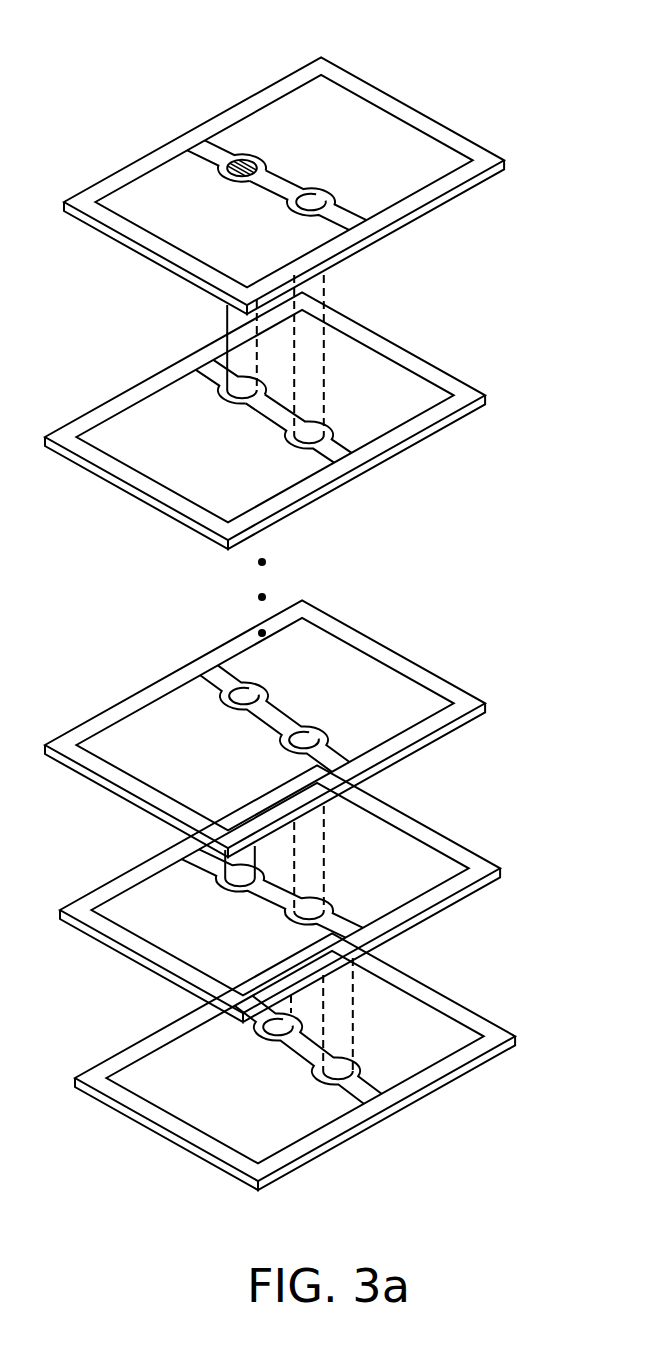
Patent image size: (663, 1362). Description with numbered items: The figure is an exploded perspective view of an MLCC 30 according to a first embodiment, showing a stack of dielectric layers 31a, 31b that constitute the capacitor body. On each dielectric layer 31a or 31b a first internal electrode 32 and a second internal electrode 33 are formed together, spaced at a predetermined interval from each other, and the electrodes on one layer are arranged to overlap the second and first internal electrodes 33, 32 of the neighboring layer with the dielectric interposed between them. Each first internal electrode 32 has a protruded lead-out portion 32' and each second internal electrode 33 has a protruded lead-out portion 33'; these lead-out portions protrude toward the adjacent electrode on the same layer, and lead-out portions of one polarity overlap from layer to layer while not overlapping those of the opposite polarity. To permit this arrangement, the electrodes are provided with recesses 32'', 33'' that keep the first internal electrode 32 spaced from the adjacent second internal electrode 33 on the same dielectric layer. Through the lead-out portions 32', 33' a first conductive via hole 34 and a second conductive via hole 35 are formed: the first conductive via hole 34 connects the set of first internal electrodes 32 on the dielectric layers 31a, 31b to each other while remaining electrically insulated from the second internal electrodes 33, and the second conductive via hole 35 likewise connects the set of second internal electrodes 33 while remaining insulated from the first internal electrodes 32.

The MLCC 30 is at (563, 66).
The dielectric layer 31a is at (494, 173).
The dielectric layer 31b is at (462, 415).
The first internal electrode 32 is at (261, 282).
The lead-out portion 32' is at (146, 215).
The recess 32'' is at (321, 341).
The second internal electrode 33 is at (307, 303).
The lead-out portion 33' is at (403, 377).
The recess 33'' is at (237, 258).
The first conductive via hole 34 is at (227, 330).
The second conductive via hole 35 is at (327, 380).